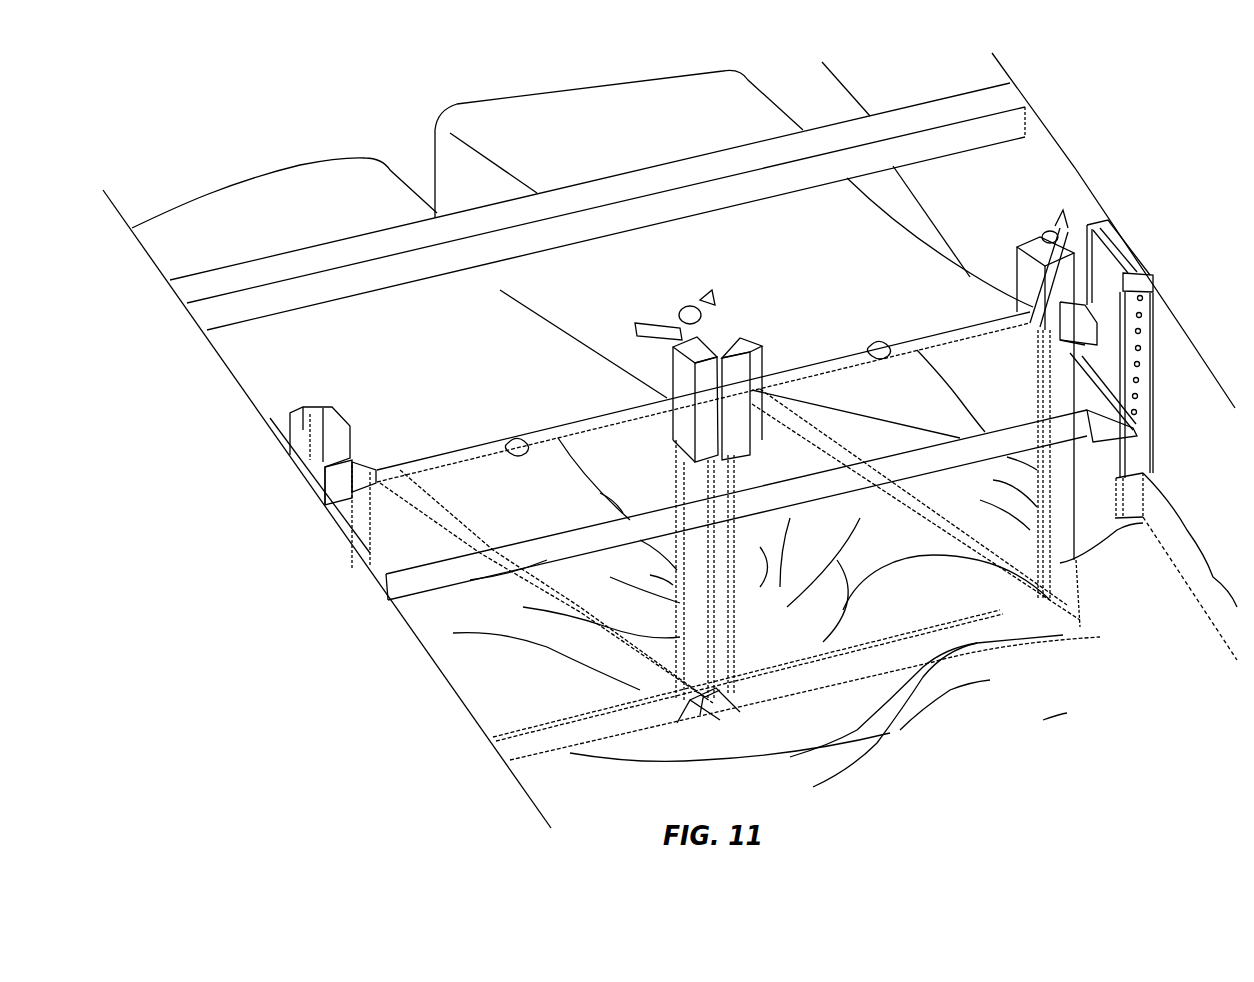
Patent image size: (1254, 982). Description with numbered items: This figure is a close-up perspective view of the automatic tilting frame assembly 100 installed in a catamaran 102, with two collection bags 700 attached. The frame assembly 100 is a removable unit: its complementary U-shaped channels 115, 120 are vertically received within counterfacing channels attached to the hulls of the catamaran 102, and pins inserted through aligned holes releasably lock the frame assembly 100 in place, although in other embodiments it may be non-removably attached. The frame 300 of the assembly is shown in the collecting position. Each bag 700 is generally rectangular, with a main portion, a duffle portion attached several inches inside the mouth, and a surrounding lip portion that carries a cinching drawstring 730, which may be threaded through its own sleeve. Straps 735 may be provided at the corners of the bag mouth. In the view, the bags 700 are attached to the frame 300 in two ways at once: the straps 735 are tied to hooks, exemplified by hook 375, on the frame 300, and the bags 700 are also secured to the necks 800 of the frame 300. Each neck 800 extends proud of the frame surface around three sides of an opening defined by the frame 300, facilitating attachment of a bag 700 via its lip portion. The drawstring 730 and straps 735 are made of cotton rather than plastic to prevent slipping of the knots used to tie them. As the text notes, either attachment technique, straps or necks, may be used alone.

The automatic tilting frame assembly 100 is at (1044, 752).
The catamaran 102 is at (290, 685).
The complementary U-shaped channel 115 is at (290, 458).
The complementary U-shaped channel 120 is at (1120, 234).
The frame 300 is at (543, 747).
The hook 375 is at (683, 348).
The collection bag 700 is at (430, 350).
The cinching drawstring 730 is at (522, 440).
The strap 735 is at (707, 315).
The neck 800 is at (590, 710).